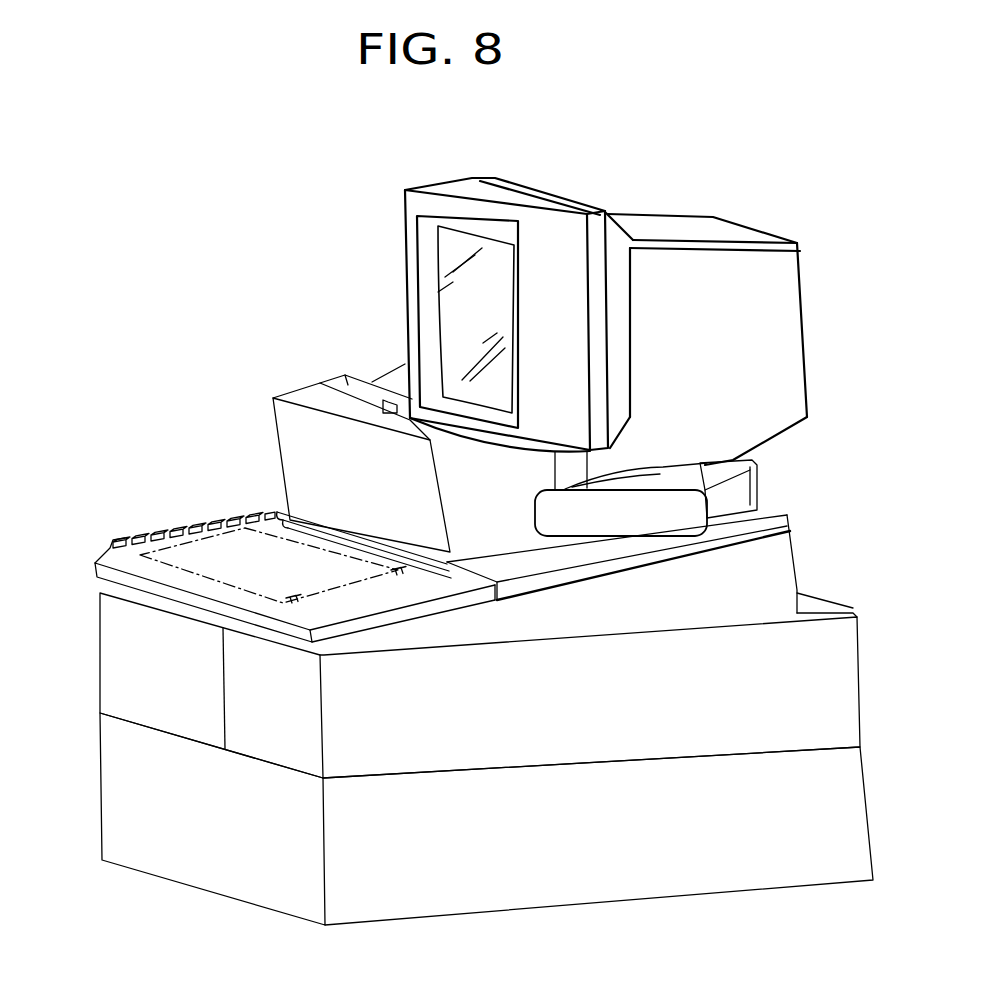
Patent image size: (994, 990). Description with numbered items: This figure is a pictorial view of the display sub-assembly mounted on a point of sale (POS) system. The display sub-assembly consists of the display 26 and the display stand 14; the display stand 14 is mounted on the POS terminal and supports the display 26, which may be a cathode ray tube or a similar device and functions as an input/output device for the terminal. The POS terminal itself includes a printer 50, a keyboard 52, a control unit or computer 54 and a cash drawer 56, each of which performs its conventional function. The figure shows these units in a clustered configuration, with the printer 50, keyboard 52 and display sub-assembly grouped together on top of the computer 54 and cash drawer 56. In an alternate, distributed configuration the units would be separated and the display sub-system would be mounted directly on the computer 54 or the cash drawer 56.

The display stand 14 is at (807, 480).
The display 26 is at (708, 215).
The printer 50 is at (275, 418).
The keyboard 52 is at (167, 520).
The control unit or computer 54 is at (103, 663).
The cash drawer 56 is at (97, 813).